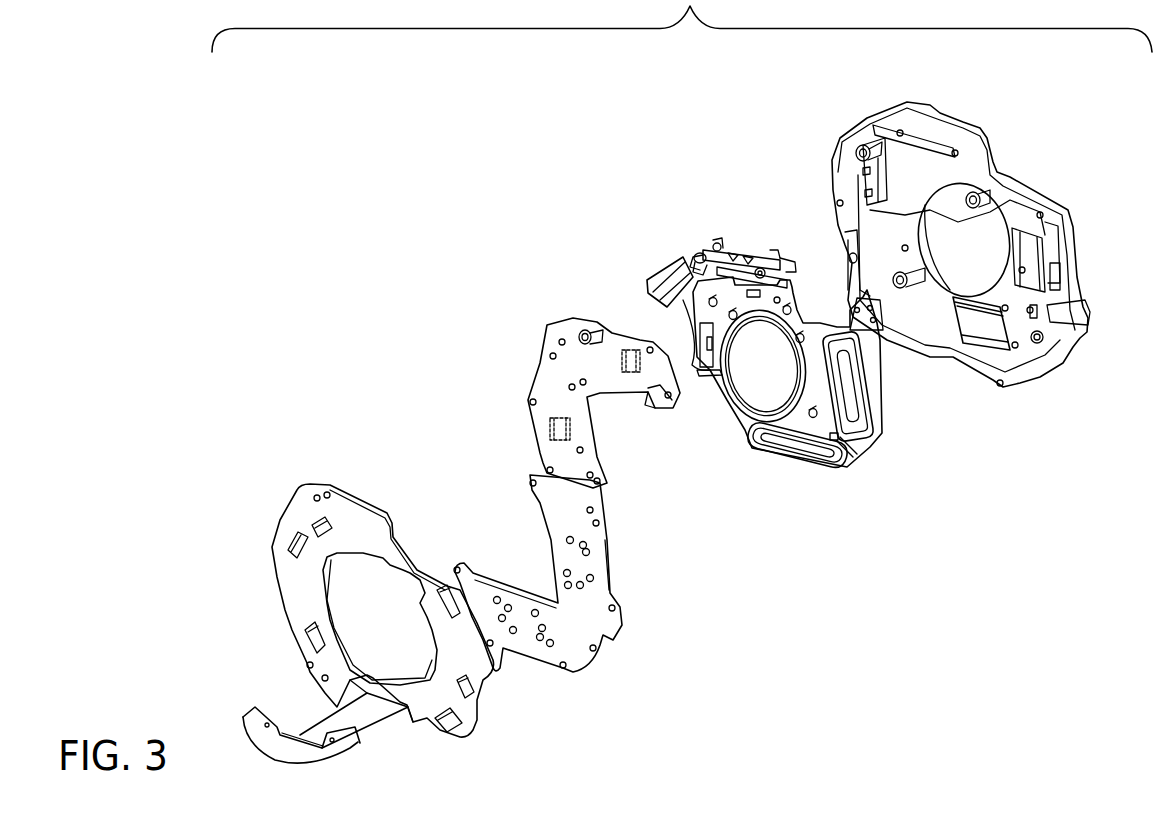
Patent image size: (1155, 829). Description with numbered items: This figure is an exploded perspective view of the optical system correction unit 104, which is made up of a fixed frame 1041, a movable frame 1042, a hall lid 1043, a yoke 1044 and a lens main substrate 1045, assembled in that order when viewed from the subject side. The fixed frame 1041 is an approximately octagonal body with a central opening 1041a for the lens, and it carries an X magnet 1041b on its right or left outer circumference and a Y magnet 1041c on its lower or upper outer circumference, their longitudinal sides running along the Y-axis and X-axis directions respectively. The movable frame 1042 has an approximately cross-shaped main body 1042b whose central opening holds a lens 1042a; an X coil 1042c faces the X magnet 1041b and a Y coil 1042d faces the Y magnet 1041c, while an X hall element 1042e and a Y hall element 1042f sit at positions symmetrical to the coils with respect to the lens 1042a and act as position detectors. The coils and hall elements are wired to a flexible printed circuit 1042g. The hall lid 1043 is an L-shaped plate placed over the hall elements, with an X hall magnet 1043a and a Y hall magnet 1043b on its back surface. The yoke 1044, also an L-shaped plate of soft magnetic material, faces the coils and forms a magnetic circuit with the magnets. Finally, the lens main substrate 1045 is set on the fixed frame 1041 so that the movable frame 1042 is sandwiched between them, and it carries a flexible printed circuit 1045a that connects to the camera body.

The optical system correction unit 104 is at (1047, 99).
The fixed frame 1041 is at (917, 96).
The opening 1041a is at (961, 215).
The X magnet 1041b is at (1035, 260).
The Y magnet 1041c is at (980, 335).
The movable frame 1042 is at (738, 395).
The lens 1042a is at (765, 403).
The main body 1042b is at (813, 343).
The X coil 1042c is at (872, 412).
The Y coil 1042d is at (790, 450).
The X hall element 1042e is at (692, 297).
The Y hall element 1042f is at (755, 270).
The flexible printed circuit 1042g is at (657, 292).
The hall lid 1043 is at (557, 322).
The X hall magnet 1043a is at (548, 437).
The Y hall magnet 1043b is at (628, 372).
The yoke 1044 is at (584, 658).
The lens main substrate 1045 is at (466, 737).
The flexible printed circuit 1045a is at (380, 714).